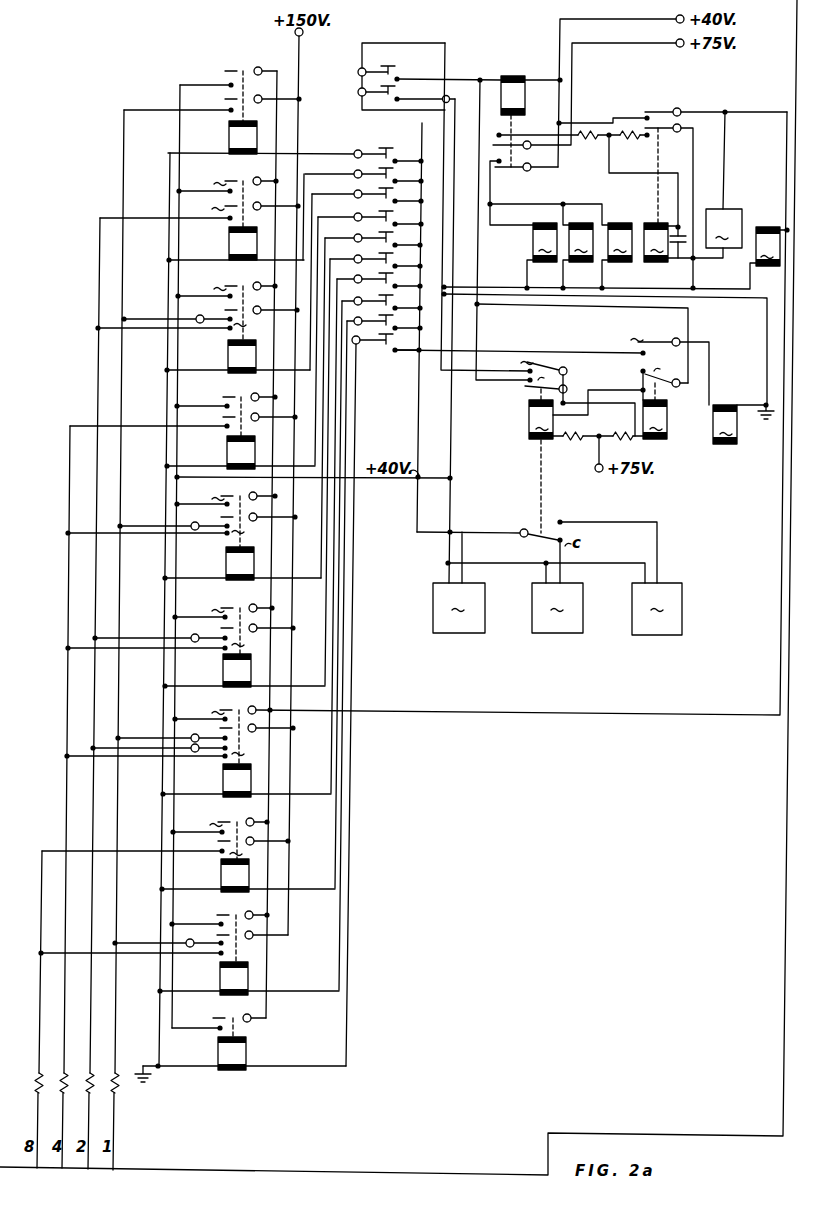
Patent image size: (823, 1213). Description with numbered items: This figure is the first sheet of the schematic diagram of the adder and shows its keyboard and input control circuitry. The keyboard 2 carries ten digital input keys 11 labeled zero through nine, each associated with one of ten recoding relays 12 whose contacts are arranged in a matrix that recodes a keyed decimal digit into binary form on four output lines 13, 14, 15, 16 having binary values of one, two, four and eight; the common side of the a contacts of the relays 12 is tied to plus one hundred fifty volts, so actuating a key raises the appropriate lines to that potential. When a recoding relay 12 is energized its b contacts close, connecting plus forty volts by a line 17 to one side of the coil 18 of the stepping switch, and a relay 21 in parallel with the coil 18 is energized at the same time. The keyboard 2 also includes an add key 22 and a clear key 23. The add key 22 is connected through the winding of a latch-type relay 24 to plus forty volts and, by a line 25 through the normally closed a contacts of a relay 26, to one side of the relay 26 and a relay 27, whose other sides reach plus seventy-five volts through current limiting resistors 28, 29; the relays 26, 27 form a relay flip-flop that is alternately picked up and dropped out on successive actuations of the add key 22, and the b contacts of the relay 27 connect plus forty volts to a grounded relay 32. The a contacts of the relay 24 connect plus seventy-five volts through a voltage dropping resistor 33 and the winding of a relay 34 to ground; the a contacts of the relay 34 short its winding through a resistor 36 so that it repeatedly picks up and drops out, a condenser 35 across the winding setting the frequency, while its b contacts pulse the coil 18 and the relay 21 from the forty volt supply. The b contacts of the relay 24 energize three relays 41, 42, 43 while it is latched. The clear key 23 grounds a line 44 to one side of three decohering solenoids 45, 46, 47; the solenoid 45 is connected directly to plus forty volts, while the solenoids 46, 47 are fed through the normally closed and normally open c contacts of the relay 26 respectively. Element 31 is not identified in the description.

The keyboard 2 is at (388, 327).
The digital input keys 11 is at (376, 170).
The recoding relays 12 is at (217, 1030).
The output line 13 is at (114, 1120).
The output line 14 is at (89, 1120).
The output line 15 is at (64, 1120).
The output line 16 is at (38, 1120).
The line 17 is at (458, 714).
The coil of stepping switch 18 is at (724, 228).
The relay 21 is at (768, 246).
The add key 22 is at (398, 75).
The clear key 23 is at (401, 100).
The relay 24 is at (511, 76).
The line 25 is at (477, 250).
The relay 26 is at (539, 395).
The relay 27 is at (651, 384).
The current limiting resistor 28 is at (578, 443).
The current limiting resistor 29 is at (618, 447).
The circuit 31 is at (682, 324).
The relay 32 is at (725, 424).
The voltage dropping resistor 33 is at (593, 148).
The relay 34 is at (662, 185).
The condenser 35 is at (686, 236).
The resistor 36 is at (634, 148).
The relay 41 is at (545, 242).
The relay 42 is at (581, 242).
The relay 43 is at (620, 242).
The line 44 is at (448, 499).
The decohering solenoid 45 is at (459, 608).
The decohering solenoid 46 is at (557, 608).
The decohering solenoid 47 is at (657, 609).